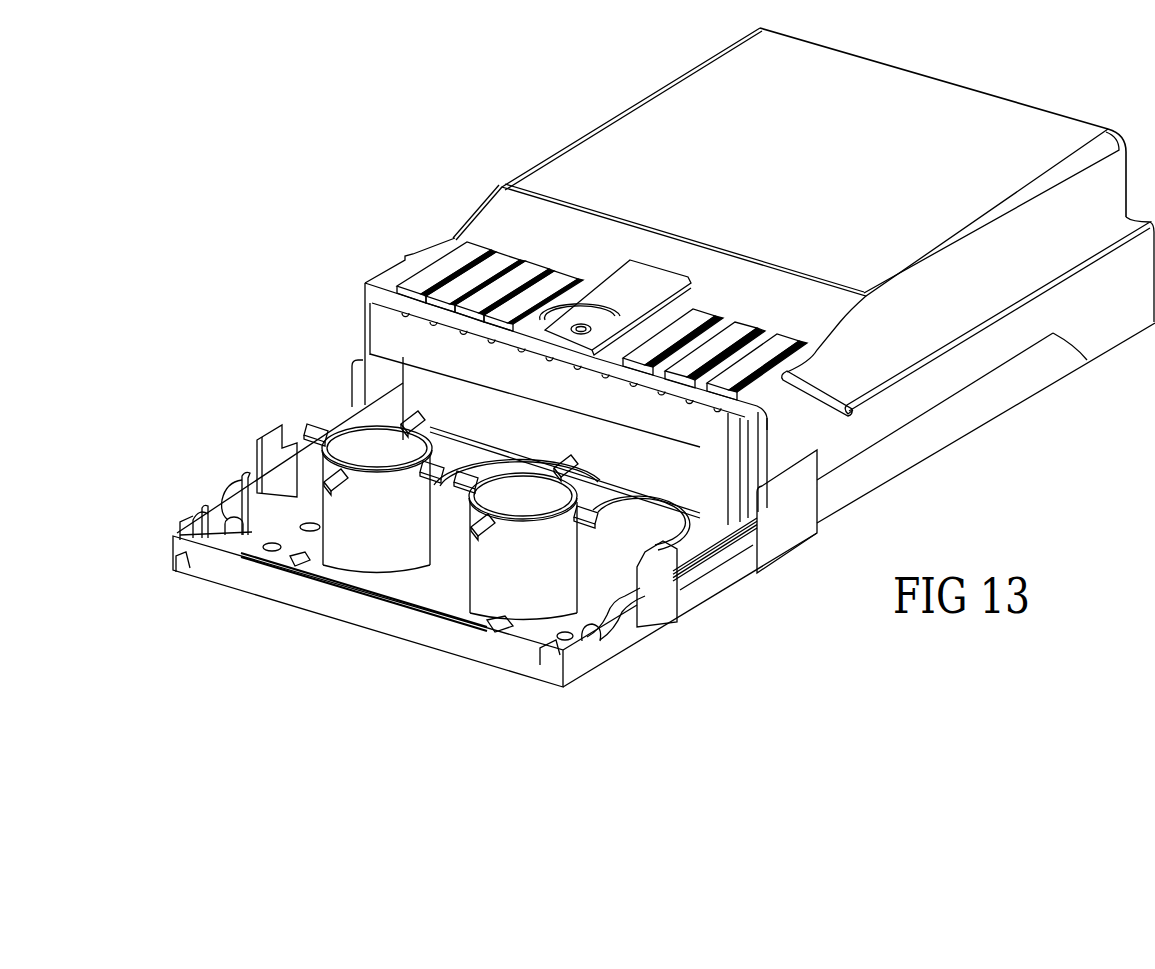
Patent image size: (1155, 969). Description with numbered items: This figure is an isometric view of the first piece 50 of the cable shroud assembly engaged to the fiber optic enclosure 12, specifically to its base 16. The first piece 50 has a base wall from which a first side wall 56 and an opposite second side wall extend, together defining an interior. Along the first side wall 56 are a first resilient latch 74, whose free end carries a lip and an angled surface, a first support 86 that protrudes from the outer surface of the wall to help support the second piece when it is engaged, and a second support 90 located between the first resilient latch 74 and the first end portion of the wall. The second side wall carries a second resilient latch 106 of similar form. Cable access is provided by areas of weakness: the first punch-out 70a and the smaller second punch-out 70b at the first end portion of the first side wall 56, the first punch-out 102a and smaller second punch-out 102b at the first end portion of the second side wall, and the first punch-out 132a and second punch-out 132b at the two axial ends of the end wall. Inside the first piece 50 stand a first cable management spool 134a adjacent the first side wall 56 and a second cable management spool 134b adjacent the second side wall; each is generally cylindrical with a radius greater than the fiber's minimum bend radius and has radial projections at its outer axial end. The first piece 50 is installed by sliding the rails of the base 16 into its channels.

The fiber optic enclosure 12 is at (644, 80).
The base 16 is at (947, 430).
The first piece 50 is at (291, 406).
The second resilient latch 106 is at (256, 437).
The first punch-out 102a is at (190, 522).
The second punch-out 102b is at (213, 530).
The second punch-out 132b is at (183, 557).
The second cable management spool 134b is at (402, 534).
The first cable management spool 134a is at (550, 581).
The first punch-out 132a is at (543, 638).
The first punch-out 70a is at (588, 638).
The second punch-out 70b is at (602, 607).
The second support 90 is at (641, 607).
The first side wall 56 is at (703, 597).
The first support 86 is at (678, 577).
The first resilient latch 74 is at (657, 566).